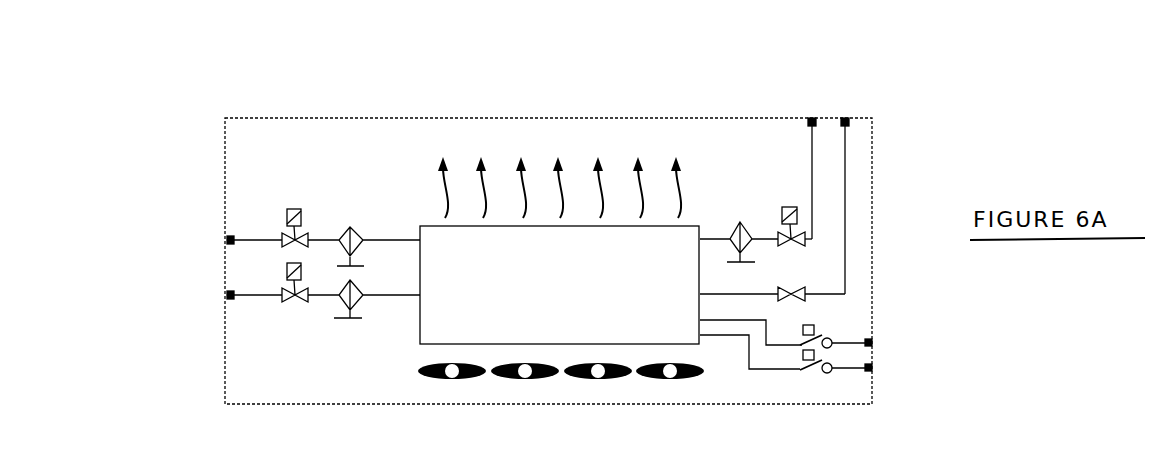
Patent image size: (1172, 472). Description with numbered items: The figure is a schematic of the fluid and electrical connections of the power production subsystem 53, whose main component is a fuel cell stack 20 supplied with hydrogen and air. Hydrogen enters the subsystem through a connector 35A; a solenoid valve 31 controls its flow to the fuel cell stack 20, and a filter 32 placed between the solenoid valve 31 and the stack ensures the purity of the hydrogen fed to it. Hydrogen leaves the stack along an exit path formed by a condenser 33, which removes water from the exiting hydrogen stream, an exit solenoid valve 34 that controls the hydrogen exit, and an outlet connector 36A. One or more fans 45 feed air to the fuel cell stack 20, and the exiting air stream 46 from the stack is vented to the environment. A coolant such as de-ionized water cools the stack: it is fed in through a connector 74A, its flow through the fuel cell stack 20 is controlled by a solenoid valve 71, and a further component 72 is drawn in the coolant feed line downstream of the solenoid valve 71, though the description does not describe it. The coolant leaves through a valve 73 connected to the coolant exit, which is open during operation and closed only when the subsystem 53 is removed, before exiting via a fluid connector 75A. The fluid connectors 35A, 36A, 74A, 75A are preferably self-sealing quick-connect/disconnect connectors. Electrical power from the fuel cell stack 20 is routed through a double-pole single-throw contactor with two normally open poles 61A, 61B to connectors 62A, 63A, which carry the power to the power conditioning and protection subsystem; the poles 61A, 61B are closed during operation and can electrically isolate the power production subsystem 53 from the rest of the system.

The fuel cell stack 20 is at (655, 323).
The fans 45 is at (422, 383).
The exiting air stream 46 is at (688, 153).
The power production subsystem 53 is at (914, 110).
The solenoid valve 31 is at (287, 218).
The filter 32 is at (350, 227).
The condenser 33 is at (737, 222).
The exit solenoid valve 34 is at (789, 205).
The connector 35A is at (235, 241).
The outlet connector 36A is at (810, 170).
The solenoid valve 71 is at (287, 300).
The second filter 72 is at (338, 320).
The valve 73 is at (803, 300).
The connector 74A is at (235, 297).
The fluid connector 75A is at (849, 197).
The pole 61A is at (814, 376).
The pole 61B is at (820, 338).
The connector 62A is at (869, 371).
The connector 63A is at (869, 346).